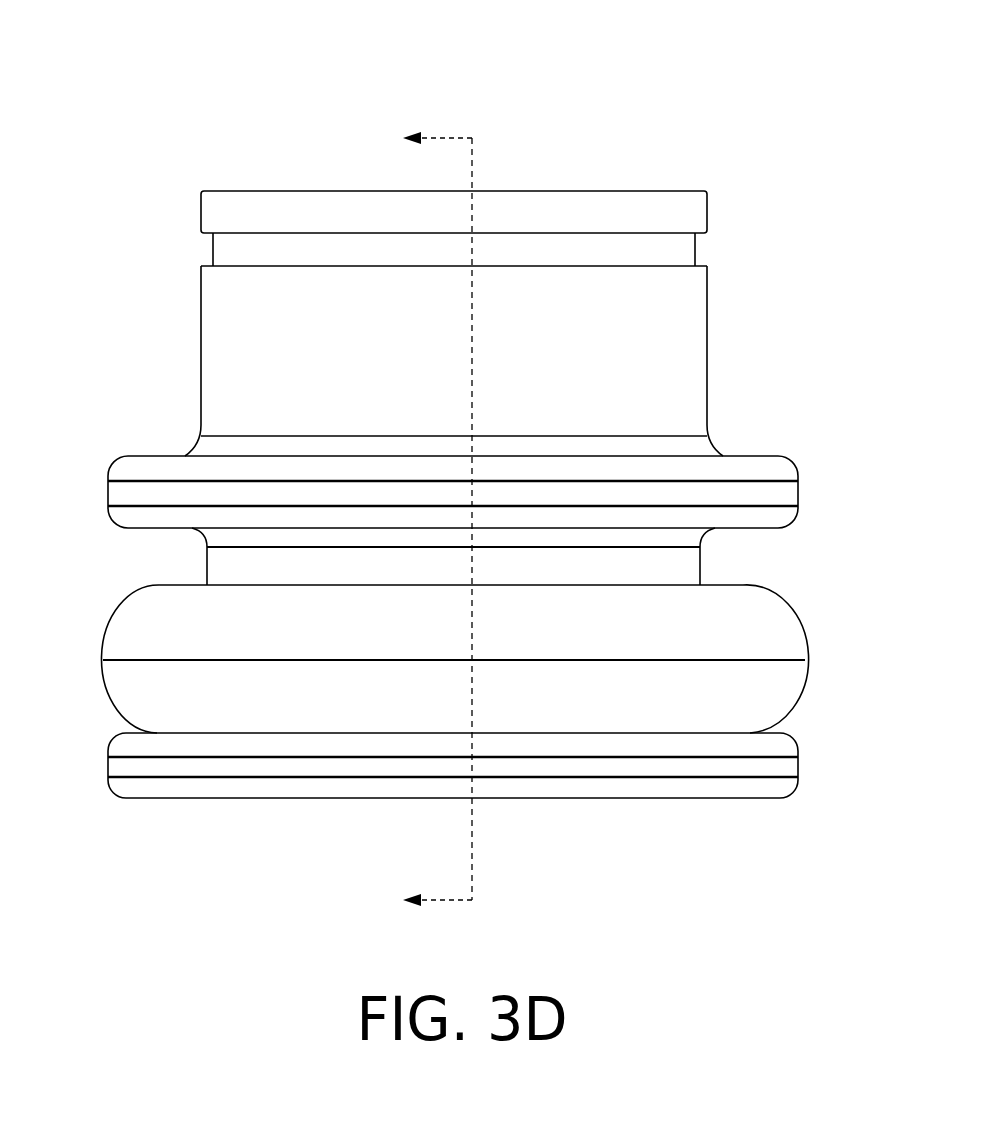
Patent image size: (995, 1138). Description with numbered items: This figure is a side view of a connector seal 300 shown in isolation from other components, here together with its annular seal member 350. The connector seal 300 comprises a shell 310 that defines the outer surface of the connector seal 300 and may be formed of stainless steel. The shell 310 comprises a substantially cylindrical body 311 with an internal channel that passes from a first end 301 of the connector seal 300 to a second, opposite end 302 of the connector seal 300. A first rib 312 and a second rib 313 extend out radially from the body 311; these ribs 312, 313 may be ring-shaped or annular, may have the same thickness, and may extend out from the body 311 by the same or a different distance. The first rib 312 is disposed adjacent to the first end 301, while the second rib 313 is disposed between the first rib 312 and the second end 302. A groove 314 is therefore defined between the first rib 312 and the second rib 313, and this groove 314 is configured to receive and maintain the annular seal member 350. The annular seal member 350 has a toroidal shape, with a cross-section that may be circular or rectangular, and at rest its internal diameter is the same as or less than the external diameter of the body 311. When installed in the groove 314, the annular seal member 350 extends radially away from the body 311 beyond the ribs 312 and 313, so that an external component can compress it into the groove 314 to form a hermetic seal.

The connector seal 300 is at (225, 69).
The first end 301 is at (213, 800).
The second end 302 is at (680, 189).
The shell 310 is at (717, 383).
The substantially cylindrical body 311 is at (266, 337).
The first rib 312 is at (126, 745).
The second rib 313 is at (146, 468).
The groove 314 is at (153, 567).
The annular seal member 350 is at (757, 617).